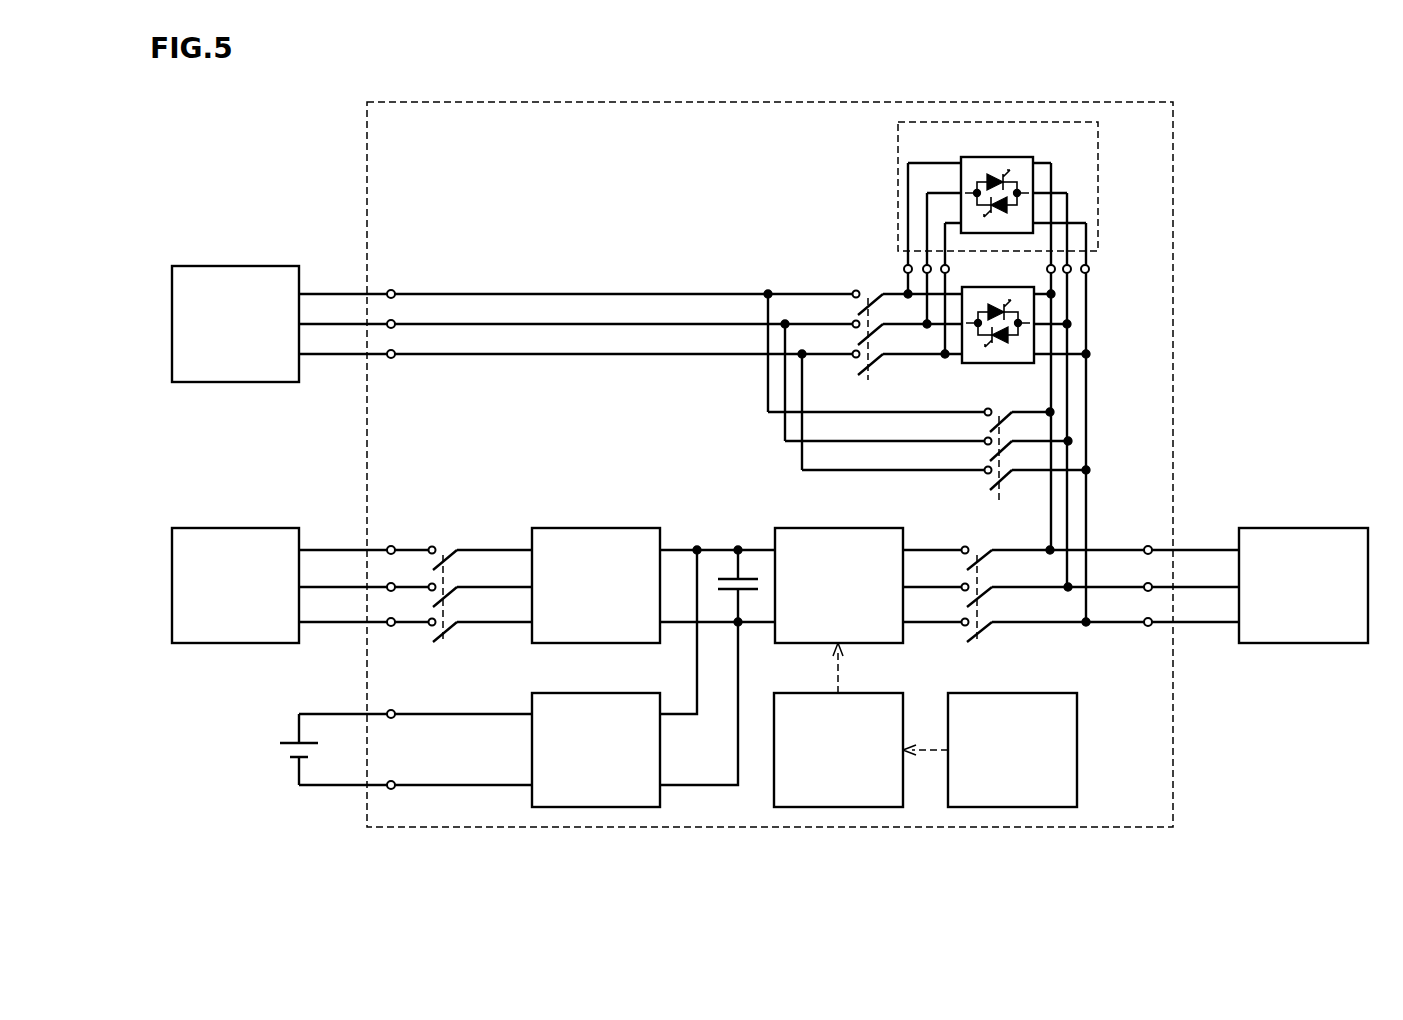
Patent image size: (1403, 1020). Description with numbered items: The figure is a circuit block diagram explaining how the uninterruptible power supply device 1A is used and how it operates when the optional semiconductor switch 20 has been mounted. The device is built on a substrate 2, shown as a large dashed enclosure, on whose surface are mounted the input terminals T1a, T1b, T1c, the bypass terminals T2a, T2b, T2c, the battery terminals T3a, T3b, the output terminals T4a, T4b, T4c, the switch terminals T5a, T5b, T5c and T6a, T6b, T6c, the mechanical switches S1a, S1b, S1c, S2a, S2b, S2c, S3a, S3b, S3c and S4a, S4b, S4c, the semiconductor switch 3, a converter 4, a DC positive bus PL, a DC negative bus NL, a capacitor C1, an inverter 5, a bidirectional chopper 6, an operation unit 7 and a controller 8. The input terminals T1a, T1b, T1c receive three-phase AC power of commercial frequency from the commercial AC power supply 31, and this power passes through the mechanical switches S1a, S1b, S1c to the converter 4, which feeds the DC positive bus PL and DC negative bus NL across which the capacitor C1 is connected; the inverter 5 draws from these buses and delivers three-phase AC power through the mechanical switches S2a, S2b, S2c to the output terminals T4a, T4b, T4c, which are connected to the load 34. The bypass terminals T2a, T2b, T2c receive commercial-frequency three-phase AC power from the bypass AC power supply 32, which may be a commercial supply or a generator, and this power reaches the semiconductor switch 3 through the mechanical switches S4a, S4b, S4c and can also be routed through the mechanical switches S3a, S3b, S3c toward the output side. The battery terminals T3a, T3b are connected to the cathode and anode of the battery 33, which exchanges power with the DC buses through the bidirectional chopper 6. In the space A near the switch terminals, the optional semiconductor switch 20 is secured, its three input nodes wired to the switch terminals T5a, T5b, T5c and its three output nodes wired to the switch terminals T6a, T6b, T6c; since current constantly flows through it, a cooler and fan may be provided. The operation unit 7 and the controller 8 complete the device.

The uninterruptible power supply device 1A is at (447, 101).
The substrate 2 is at (566, 102).
The space A is at (1098, 183).
The semiconductor switch 20 is at (1000, 157).
The semiconductor switch 3 is at (1000, 287).
The bypass AC power supply 32 is at (232, 266).
The commercial AC power supply 31 is at (232, 528).
The battery 33 is at (288, 740).
The load 34 is at (1300, 528).
The converter 4 is at (597, 528).
The inverter 5 is at (840, 528).
The bidirectional chopper 6 is at (597, 693).
The operation unit 7 is at (1039, 693).
The controller 8 is at (865, 693).
The DC positive bus PL is at (716, 548).
The DC negative bus NL is at (716, 625).
The capacitor C1 is at (747, 574).
The input terminal T1a is at (387, 548).
The input terminal T1b is at (387, 585).
The input terminal T1c is at (387, 620).
The bypass terminal T2a is at (387, 292).
The bypass terminal T2b is at (387, 322).
The bypass terminal T2c is at (388, 357).
The battery terminal T3a is at (387, 712).
The battery terminal T3b is at (388, 788).
The output terminal T4a is at (1152, 547).
The output terminal T4b is at (1152, 584).
The output terminal T4c is at (1152, 619).
The switch terminal T5a is at (905, 265).
The switch terminal T5b is at (924, 265).
The switch terminal T5c is at (942, 265).
The switch terminal T6a is at (1054, 272).
The switch terminal T6b is at (1070, 272).
The switch terminal T6c is at (1089, 269).
The mechanical switch S1a is at (450, 558).
The mechanical switch S1b is at (450, 595).
The mechanical switch S1c is at (450, 630).
The mechanical switch S2a is at (984, 558).
The mechanical switch S2b is at (984, 595).
The mechanical switch S2c is at (984, 630).
The mechanical switch S3a is at (1002, 418).
The mechanical switch S3b is at (990, 458).
The mechanical switch S3c is at (1008, 476).
The mechanical switch S4a is at (866, 302).
The mechanical switch S4b is at (860, 340).
The mechanical switch S4c is at (878, 362).